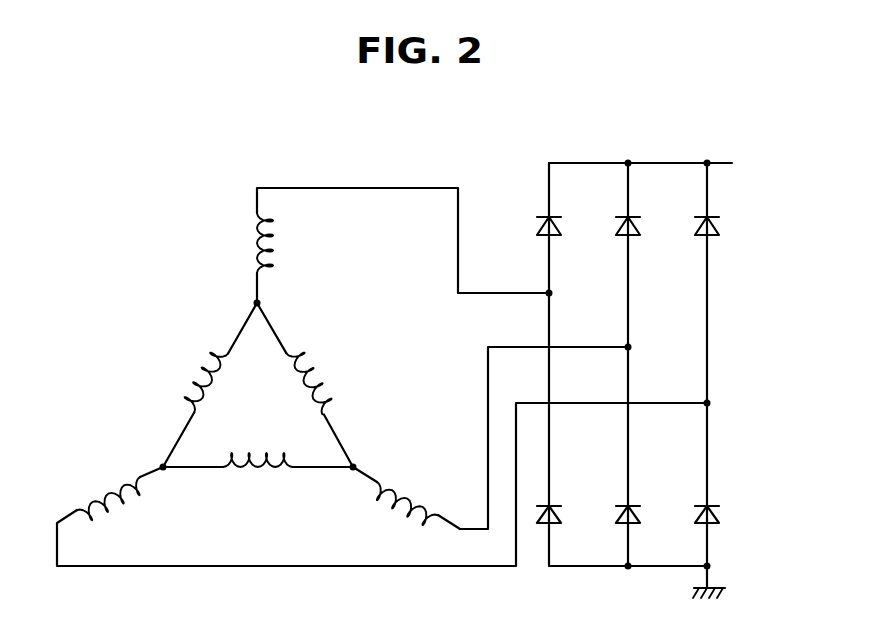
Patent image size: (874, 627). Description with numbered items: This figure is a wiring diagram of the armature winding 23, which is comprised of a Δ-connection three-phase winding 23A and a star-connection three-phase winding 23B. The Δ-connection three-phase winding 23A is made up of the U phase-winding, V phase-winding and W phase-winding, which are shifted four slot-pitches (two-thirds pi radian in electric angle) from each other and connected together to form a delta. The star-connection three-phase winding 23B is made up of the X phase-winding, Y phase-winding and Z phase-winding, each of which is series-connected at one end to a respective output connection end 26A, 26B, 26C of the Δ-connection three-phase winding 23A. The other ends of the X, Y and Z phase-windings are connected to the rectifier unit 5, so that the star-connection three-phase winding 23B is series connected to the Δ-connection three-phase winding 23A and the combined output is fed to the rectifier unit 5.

The rectifier unit 5 is at (633, 135).
The armature winding 23 is at (196, 207).
The Δ-connection three-phase winding 23A is at (319, 345).
The star-connection three-phase winding 23B is at (285, 243).
The output connection end 26A is at (260, 303).
The output connection end 26B is at (357, 462).
The output connection end 26C is at (163, 470).